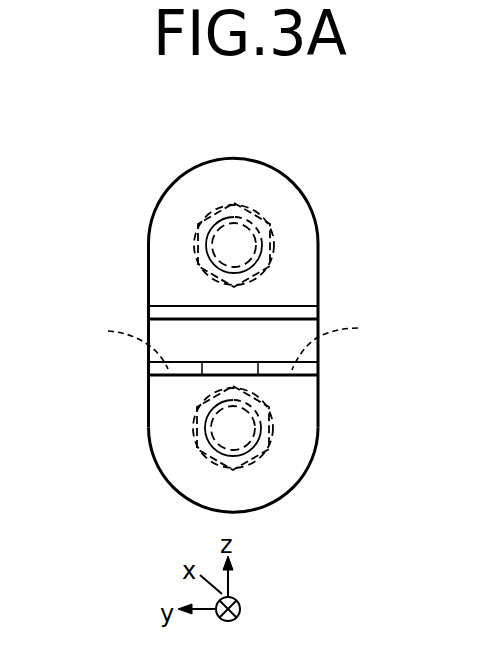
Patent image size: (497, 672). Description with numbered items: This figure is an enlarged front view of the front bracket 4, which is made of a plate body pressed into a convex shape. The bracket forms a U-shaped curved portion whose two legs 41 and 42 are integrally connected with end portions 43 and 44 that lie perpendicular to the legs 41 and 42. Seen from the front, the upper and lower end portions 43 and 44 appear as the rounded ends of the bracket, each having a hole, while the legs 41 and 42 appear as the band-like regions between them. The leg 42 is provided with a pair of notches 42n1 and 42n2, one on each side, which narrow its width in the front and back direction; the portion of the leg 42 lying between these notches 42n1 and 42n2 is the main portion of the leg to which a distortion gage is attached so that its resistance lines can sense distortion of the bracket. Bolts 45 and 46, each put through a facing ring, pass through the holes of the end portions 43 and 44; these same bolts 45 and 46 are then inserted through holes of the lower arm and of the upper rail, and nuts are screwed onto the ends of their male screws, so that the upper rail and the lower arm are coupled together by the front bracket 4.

The front bracket 4 is at (148, 228).
The leg 41 is at (167, 305).
The leg 42 is at (168, 376).
The notch 42n1 is at (369, 336).
The notch 42n2 is at (95, 340).
The end portion 43 is at (183, 182).
The end portion 44 is at (173, 459).
The bolt 45 is at (268, 213).
The bolt 46 is at (274, 432).